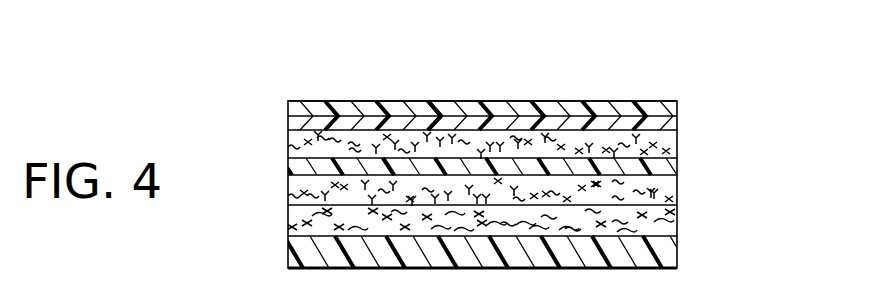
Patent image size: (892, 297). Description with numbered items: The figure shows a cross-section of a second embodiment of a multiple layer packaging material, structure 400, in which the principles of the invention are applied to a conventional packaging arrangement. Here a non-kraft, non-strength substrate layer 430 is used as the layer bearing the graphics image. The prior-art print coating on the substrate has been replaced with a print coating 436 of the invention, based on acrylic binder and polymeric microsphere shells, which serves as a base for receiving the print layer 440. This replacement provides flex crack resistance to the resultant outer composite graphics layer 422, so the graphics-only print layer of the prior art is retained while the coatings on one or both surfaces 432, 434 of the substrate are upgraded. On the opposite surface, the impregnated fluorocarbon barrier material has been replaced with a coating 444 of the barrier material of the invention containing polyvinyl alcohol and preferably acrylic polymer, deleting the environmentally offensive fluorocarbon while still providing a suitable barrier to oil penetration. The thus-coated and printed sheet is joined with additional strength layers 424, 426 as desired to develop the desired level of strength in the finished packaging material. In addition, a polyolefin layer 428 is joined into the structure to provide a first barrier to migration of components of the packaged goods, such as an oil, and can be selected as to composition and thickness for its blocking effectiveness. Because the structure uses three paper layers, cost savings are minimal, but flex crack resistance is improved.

The structure 400 is at (647, 73).
The outer composite graphics layer 422 is at (690, 104).
The strength layer 424 is at (677, 194).
The strength layer 426 is at (677, 222).
The polyolefin layer 428 is at (677, 250).
The substrate layer 430 is at (291, 143).
The surface 432 is at (342, 125).
The surface 434 is at (405, 167).
The print coating 436 is at (291, 119).
The print layer 440 is at (291, 104).
The coating 444 is at (291, 169).